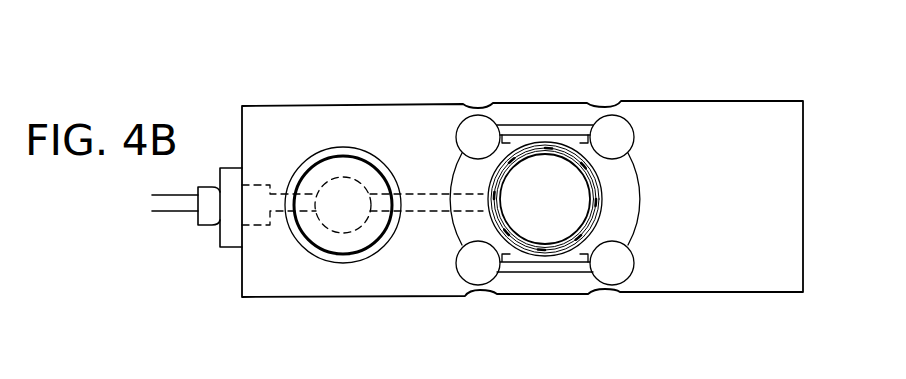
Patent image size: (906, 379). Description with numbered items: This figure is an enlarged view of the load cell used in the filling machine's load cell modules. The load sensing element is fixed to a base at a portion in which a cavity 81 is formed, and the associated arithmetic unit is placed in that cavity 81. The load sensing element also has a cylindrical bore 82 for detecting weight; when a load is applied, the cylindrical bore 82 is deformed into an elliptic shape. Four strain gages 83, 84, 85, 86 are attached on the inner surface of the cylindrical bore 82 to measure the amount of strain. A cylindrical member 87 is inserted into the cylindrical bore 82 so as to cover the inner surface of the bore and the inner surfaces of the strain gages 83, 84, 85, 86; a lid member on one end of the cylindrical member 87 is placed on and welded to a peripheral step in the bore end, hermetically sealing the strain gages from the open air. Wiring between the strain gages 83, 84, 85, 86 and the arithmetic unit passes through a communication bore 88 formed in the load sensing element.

The cavity 81 is at (345, 168).
The cylindrical bore 82 is at (547, 143).
The strain gage 83 is at (517, 148).
The strain gage 84 is at (583, 153).
The strain gage 85 is at (508, 240).
The strain gage 86 is at (582, 240).
The cylindrical member 87 is at (598, 195).
The communication bore 88 is at (417, 194).